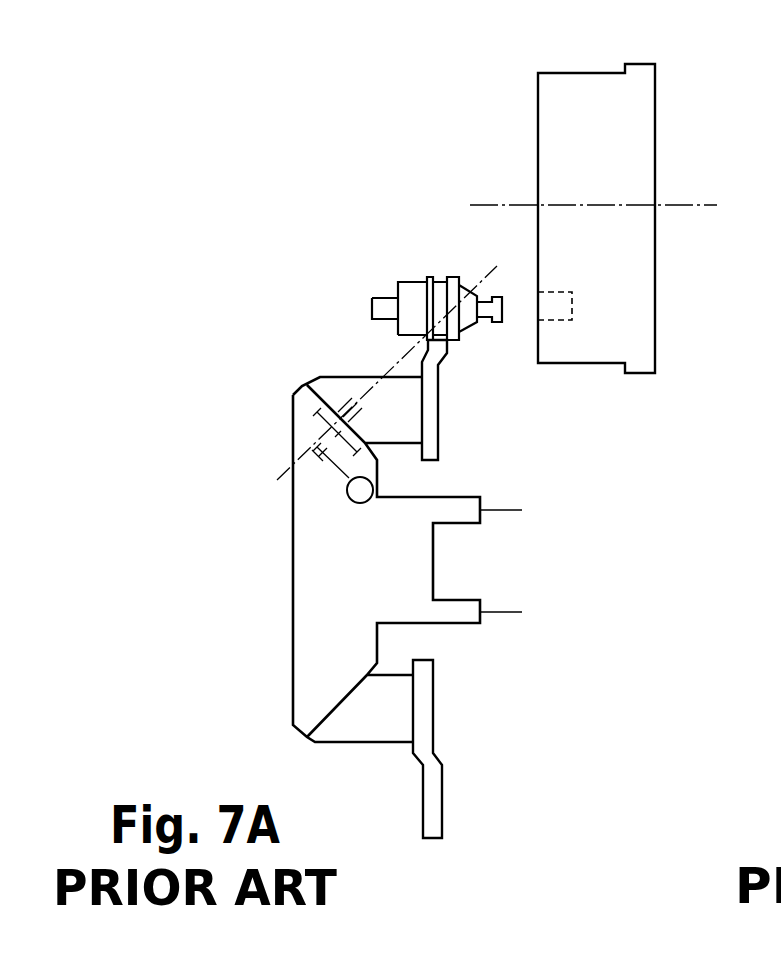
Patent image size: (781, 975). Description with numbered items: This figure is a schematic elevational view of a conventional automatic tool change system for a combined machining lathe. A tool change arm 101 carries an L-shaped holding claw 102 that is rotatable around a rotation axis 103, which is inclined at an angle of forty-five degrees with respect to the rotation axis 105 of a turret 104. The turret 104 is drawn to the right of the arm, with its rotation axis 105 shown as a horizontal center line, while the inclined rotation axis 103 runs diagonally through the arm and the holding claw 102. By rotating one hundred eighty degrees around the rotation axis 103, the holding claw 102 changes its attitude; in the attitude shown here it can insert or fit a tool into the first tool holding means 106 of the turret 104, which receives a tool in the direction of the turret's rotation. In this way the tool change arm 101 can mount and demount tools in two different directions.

The tool change arm 101 is at (258, 398).
The L-shaped holding claw 102 is at (430, 408).
The rotation axis 103 is at (397, 360).
The turret 104 is at (642, 290).
The rotation axis of turret 105 is at (670, 205).
The first tool holding means 106 is at (550, 290).